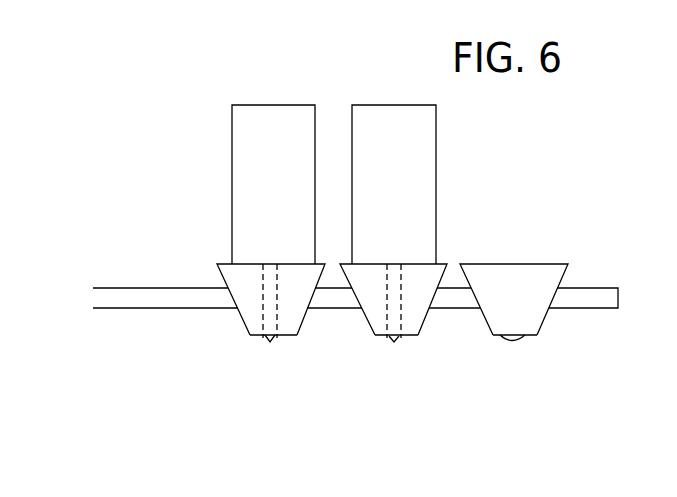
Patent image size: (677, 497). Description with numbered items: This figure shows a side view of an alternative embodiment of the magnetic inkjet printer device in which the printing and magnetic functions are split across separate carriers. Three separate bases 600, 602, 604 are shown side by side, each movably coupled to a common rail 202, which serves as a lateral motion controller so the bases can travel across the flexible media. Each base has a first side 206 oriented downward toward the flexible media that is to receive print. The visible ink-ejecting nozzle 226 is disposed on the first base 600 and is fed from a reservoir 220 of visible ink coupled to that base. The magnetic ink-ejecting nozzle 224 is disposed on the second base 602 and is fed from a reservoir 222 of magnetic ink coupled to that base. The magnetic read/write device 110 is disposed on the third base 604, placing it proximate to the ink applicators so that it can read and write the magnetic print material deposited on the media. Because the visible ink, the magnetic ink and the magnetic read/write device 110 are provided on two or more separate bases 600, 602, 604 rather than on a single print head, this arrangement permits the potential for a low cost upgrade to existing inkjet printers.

The magnetic read/write device 110 is at (512, 338).
The rail 202 is at (147, 297).
The first side 206 is at (283, 337).
The reservoir of visible ink 220 is at (298, 159).
The reservoir of magnetic ink 222 is at (415, 159).
The magnetic ink-ejecting nozzle 224 is at (385, 337).
The visible ink-ejecting nozzle 226 is at (262, 337).
The base 600 is at (220, 265).
The base 602 is at (448, 262).
The base 604 is at (550, 262).